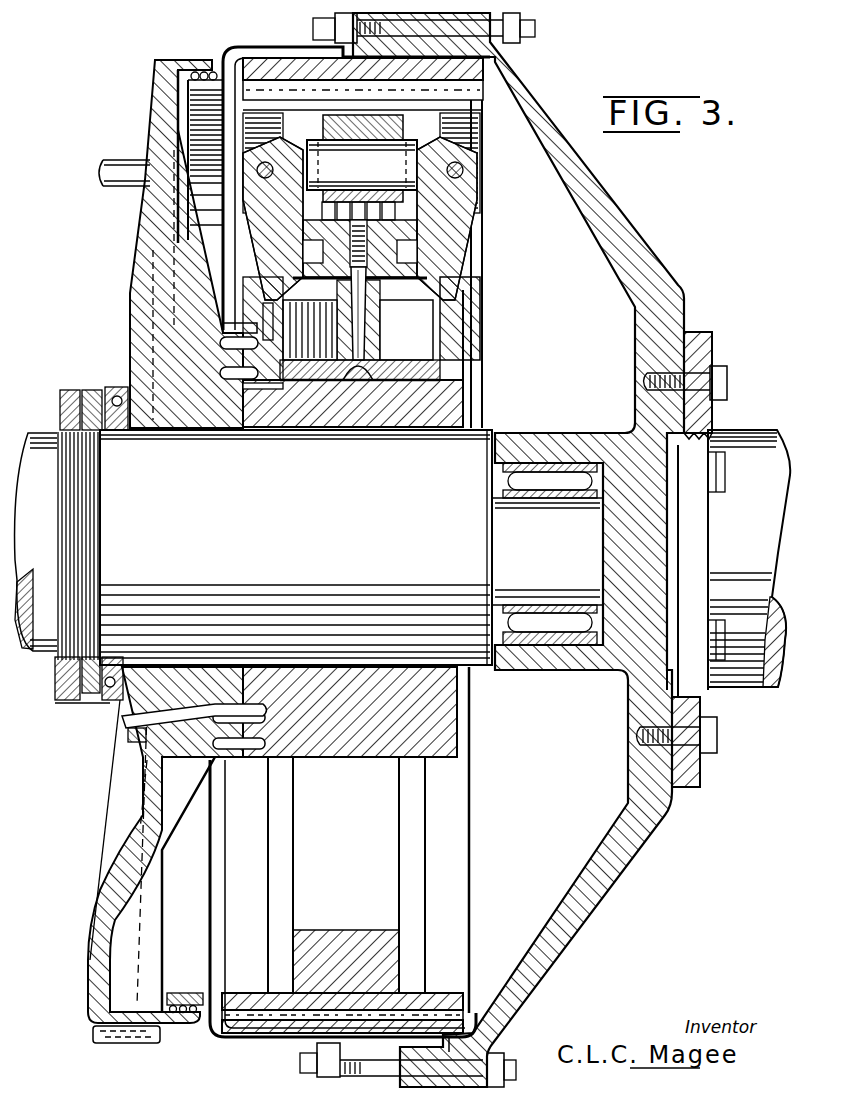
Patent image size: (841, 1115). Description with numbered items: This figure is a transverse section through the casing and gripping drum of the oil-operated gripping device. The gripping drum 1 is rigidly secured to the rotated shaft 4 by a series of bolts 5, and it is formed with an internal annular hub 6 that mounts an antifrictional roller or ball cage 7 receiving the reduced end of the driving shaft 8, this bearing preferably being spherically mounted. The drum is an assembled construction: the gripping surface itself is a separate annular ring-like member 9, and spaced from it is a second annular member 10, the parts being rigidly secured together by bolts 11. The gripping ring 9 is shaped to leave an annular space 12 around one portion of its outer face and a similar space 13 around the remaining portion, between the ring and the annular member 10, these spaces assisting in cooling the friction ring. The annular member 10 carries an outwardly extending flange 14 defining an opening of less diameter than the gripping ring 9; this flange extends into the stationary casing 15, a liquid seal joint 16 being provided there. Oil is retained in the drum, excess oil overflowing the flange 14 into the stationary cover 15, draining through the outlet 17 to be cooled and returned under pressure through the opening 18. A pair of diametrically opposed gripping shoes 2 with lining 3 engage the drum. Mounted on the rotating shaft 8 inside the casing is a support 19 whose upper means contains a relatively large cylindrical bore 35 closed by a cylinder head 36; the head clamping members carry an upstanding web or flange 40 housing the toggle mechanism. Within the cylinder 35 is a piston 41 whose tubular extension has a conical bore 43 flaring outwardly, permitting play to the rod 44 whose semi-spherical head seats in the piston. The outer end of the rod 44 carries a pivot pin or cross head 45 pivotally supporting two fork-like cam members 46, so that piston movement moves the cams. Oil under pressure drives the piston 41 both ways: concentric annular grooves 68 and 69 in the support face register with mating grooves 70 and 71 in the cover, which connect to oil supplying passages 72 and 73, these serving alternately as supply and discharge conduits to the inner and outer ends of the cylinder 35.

The gripping drum 1 is at (603, 898).
The gripping shoes 2 is at (458, 868).
The lining 3 is at (438, 1012).
The rotated shaft 4 is at (765, 460).
The bolts 5 is at (728, 383).
The internal annular hub 6 is at (563, 445).
The roller or ball cage 7 is at (528, 465).
The driving shaft 8 is at (253, 545).
The annular ring-like member 9 is at (271, 66).
The second annular member 10 is at (250, 48).
The bolts 11 is at (356, 1097).
The annular space 12 is at (365, 1066).
The space 13 is at (278, 1046).
The flange 14 is at (188, 105).
The stationary casing 15 is at (95, 976).
The liquid seal joint 16 is at (196, 64).
The outlet 17 is at (98, 1036).
The opening 18 is at (125, 168).
The support 19 is at (456, 732).
The cylindrical bore 35 is at (420, 343).
The cylinder head 36 is at (440, 285).
The upstanding web or flange 40 is at (262, 205).
The piston 41 is at (420, 372).
The conical bore 43 is at (440, 297).
The rod 44 is at (367, 325).
The pivot pin or cross head 45 is at (280, 240).
The fork-like cam members 46 is at (412, 198).
The annular groove 68 is at (250, 334).
The annular groove 69 is at (258, 386).
The mating groove 70 is at (255, 343).
The mating groove 71 is at (255, 373).
The oil supplying passage 72 is at (145, 768).
The oil supplying passage 73 is at (143, 735).